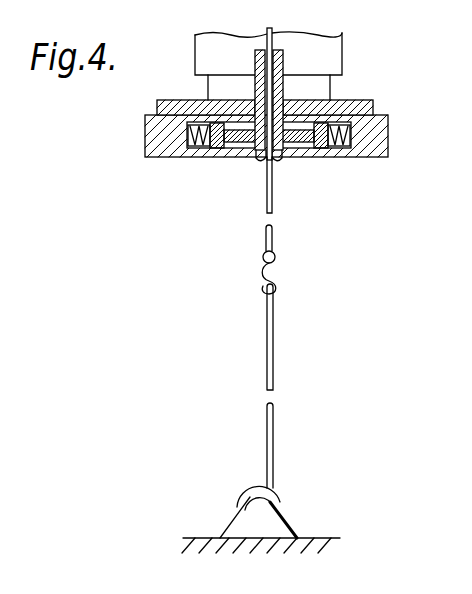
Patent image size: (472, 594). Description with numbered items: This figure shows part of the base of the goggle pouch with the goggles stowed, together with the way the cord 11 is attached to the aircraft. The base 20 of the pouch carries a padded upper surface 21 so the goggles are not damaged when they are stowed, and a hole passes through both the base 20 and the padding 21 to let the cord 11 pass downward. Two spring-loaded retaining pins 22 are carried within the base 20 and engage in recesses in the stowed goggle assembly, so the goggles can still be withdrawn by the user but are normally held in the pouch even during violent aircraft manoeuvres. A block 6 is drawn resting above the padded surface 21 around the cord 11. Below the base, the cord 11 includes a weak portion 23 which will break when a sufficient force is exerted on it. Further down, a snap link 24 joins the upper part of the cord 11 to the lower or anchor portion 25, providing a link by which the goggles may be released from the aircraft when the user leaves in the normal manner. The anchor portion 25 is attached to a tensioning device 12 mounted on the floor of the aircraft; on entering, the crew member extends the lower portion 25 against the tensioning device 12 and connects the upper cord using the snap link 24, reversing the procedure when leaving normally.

The block / housing 6 is at (328, 57).
The cord 11 is at (268, 36).
The tensioning device 12 is at (277, 500).
The base of the pouch 20 is at (156, 150).
The padded upper surface 21 is at (173, 100).
The spring-loaded retaining pins 22 is at (237, 153).
The weak portion 23 is at (272, 190).
The snap link 24 is at (278, 283).
The anchor portion of the cord 25 is at (273, 445).